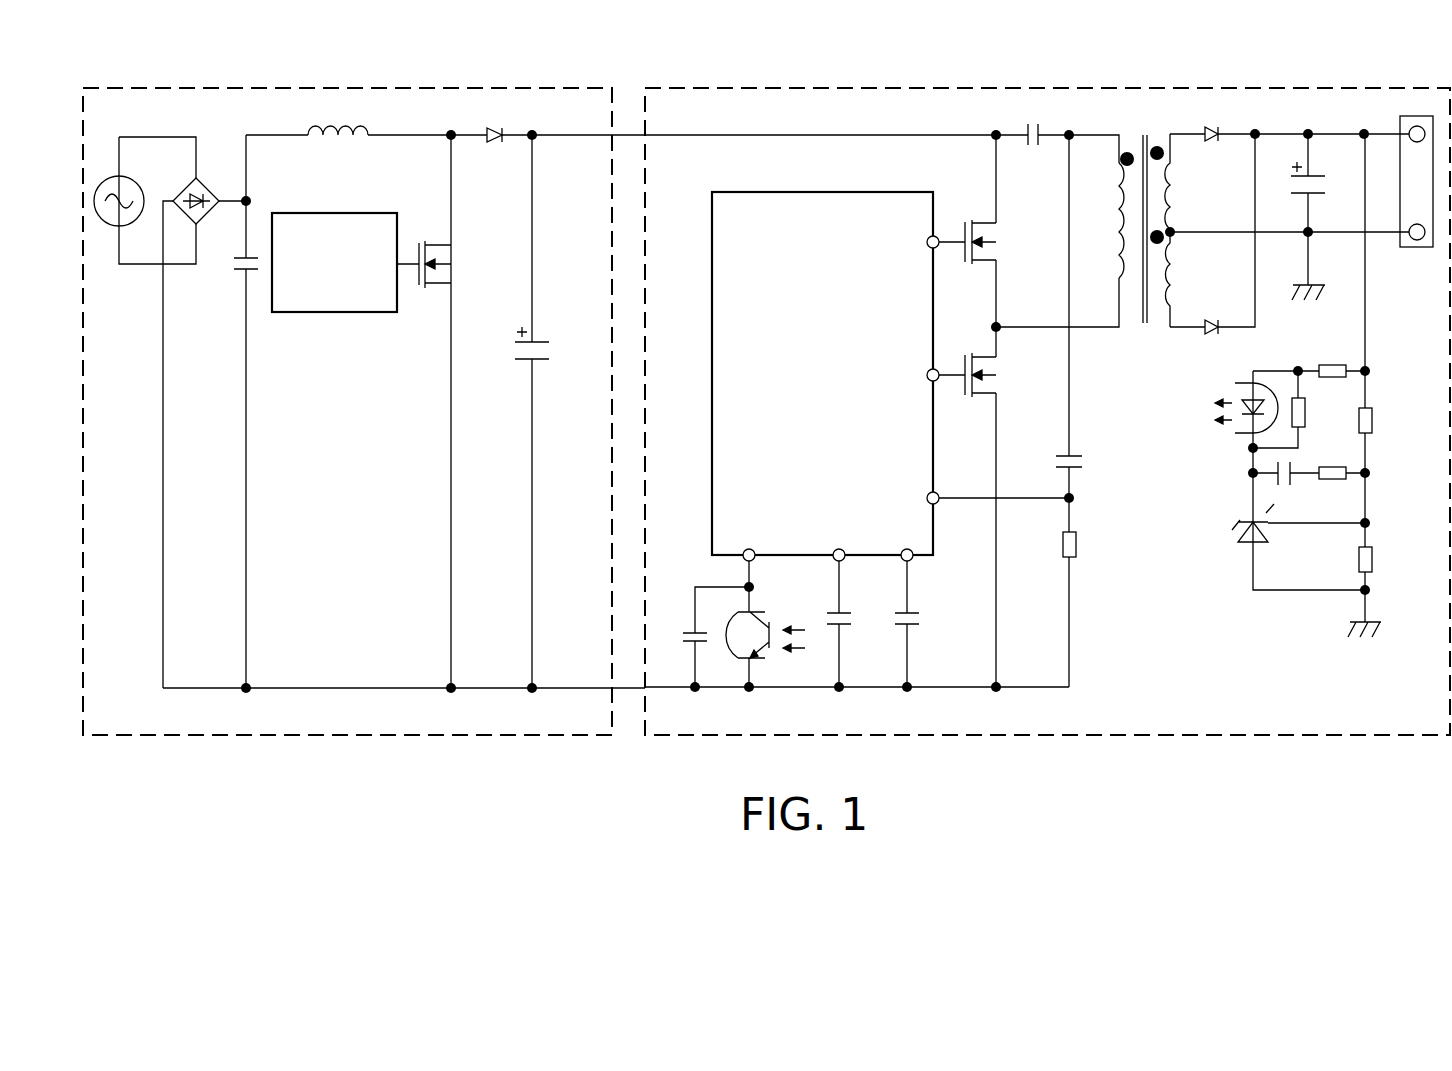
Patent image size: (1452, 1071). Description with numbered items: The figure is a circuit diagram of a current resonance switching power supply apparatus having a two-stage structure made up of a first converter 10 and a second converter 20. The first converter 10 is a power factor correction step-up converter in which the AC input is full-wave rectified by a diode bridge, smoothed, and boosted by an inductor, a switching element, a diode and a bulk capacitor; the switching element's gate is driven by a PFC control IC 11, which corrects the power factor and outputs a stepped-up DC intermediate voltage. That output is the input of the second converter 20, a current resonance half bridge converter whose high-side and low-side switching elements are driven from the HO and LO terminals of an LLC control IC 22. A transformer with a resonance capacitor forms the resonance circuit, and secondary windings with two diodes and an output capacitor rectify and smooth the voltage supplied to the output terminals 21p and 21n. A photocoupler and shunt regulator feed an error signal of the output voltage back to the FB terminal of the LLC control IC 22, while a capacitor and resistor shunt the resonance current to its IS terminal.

The first converter 10 is at (347, 88).
The PFC control IC 11 is at (337, 213).
The second converter 20 is at (893, 88).
The LLC control IC 22 is at (817, 192).
The output terminal 21p is at (1417, 125).
The output terminal 21n is at (1417, 241).